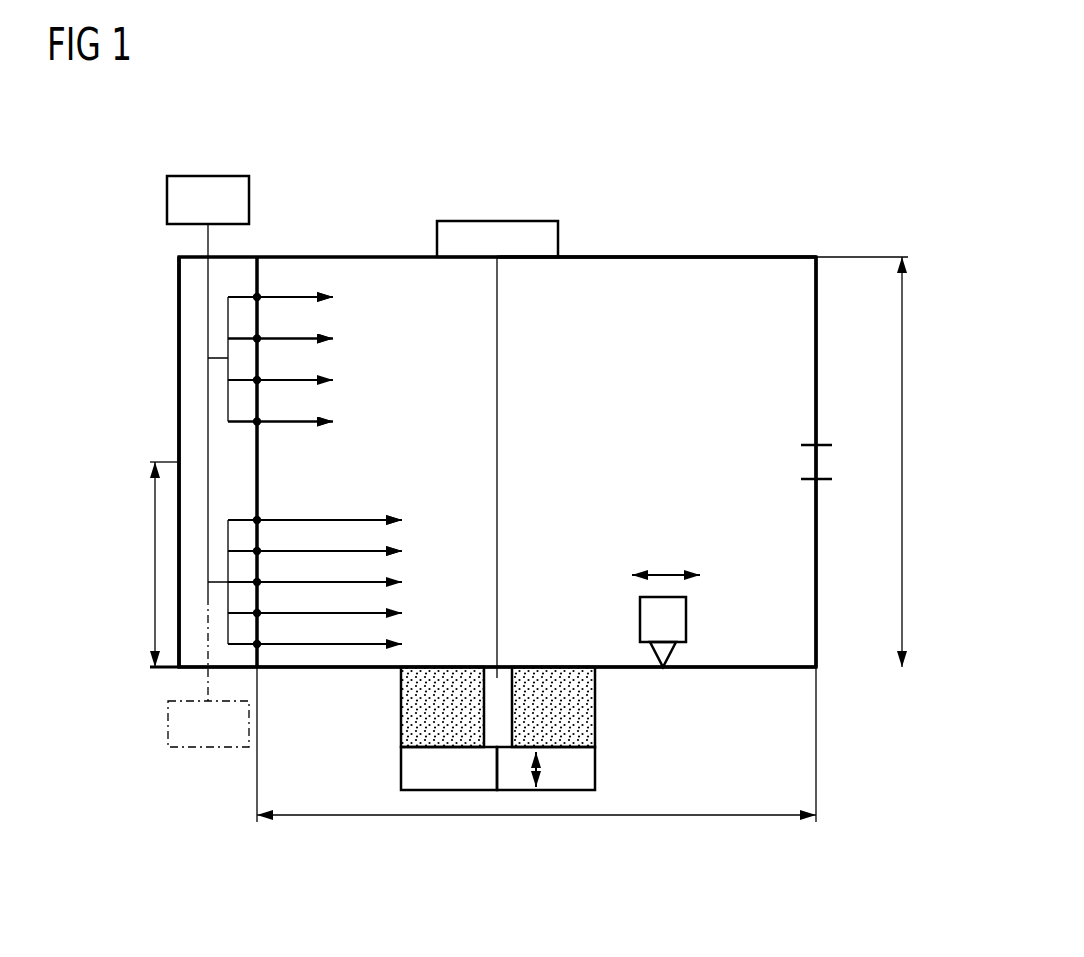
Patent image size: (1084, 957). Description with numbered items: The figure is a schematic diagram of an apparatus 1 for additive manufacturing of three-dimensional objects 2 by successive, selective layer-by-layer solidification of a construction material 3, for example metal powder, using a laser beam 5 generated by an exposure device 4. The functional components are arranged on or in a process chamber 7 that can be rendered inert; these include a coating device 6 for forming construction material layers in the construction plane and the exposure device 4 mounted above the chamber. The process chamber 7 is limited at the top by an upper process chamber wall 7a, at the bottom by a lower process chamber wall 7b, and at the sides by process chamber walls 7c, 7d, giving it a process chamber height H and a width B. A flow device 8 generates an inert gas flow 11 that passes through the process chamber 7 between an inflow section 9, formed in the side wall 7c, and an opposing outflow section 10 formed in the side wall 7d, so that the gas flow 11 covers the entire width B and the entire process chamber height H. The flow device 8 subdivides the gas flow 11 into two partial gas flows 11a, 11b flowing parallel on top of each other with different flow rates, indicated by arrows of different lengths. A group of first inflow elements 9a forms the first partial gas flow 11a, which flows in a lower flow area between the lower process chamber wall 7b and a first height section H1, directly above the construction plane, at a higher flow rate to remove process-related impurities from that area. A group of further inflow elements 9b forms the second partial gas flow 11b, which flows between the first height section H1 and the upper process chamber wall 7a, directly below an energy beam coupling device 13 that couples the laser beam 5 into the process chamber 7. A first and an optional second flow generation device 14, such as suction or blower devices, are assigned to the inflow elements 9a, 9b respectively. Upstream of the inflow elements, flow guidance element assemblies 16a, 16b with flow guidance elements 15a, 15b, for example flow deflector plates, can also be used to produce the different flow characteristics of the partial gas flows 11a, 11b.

The apparatus 1 is at (828, 196).
The three-dimensional object 2 is at (505, 675).
The construction material 3 is at (580, 705).
The exposure device 4 is at (515, 220).
The laser beam 5 is at (497, 457).
The coating device 6 is at (692, 620).
The process chamber 7 is at (826, 320).
The upper process chamber wall 7a is at (725, 255).
The lower process chamber wall 7b is at (726, 670).
The side process chamber wall 7c is at (257, 452).
The side process chamber wall 7d is at (818, 540).
The flow device 8 is at (175, 682).
The inflow section 9 is at (310, 290).
The first inflow elements 9a is at (262, 515).
The further inflow elements 9b is at (262, 290).
The outflow section 10 is at (782, 462).
The gas flow 11 is at (398, 433).
The first partial gas flow 11a is at (408, 534).
The second partial gas flow 11b is at (357, 318).
The energy beam coupling device 13 is at (535, 265).
The flow generation device 14 is at (207, 175).
The flow guidance element 15a is at (203, 547).
The flow guidance element 15b is at (203, 330).
The first flow guidance element assembly 16a is at (203, 547).
The second flow guidance element assembly 16b is at (203, 330).
The process chamber height H is at (905, 455).
The first height section H1 is at (155, 605).
The width B is at (520, 825).